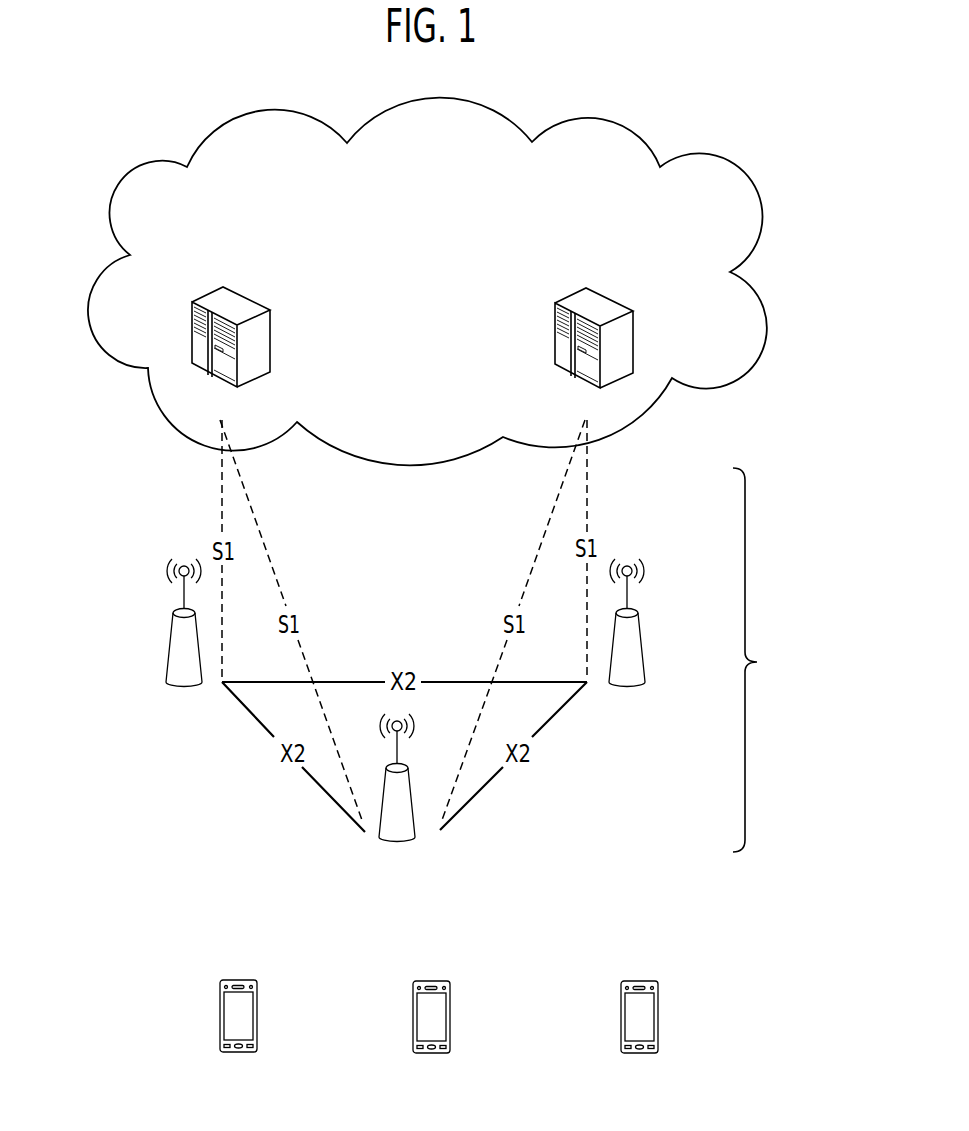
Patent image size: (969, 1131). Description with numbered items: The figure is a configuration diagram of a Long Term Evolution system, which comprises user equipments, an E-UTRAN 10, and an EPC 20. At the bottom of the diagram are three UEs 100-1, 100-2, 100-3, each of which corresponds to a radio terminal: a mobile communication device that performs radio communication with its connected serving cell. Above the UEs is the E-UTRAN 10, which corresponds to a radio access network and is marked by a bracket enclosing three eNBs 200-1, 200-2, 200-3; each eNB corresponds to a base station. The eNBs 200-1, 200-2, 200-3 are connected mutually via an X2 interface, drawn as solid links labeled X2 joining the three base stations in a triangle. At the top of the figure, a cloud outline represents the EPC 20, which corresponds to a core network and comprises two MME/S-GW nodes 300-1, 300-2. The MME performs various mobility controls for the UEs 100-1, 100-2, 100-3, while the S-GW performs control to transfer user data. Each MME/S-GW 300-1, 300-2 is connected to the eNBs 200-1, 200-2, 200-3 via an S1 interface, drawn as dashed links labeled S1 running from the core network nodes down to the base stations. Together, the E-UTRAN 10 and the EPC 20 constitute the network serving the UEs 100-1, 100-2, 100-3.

The EPC 20 is at (638, 132).
The MME/S-GW 300-1 is at (252, 300).
The MME/S-GW 300-2 is at (608, 300).
The eNB 200-1 is at (170, 647).
The eNB 200-2 is at (415, 812).
The eNB 200-3 is at (640, 623).
The E-UTRAN 10 is at (795, 660).
The UE 100-1 is at (250, 981).
The UE 100-2 is at (443, 982).
The UE 100-3 is at (650, 982).